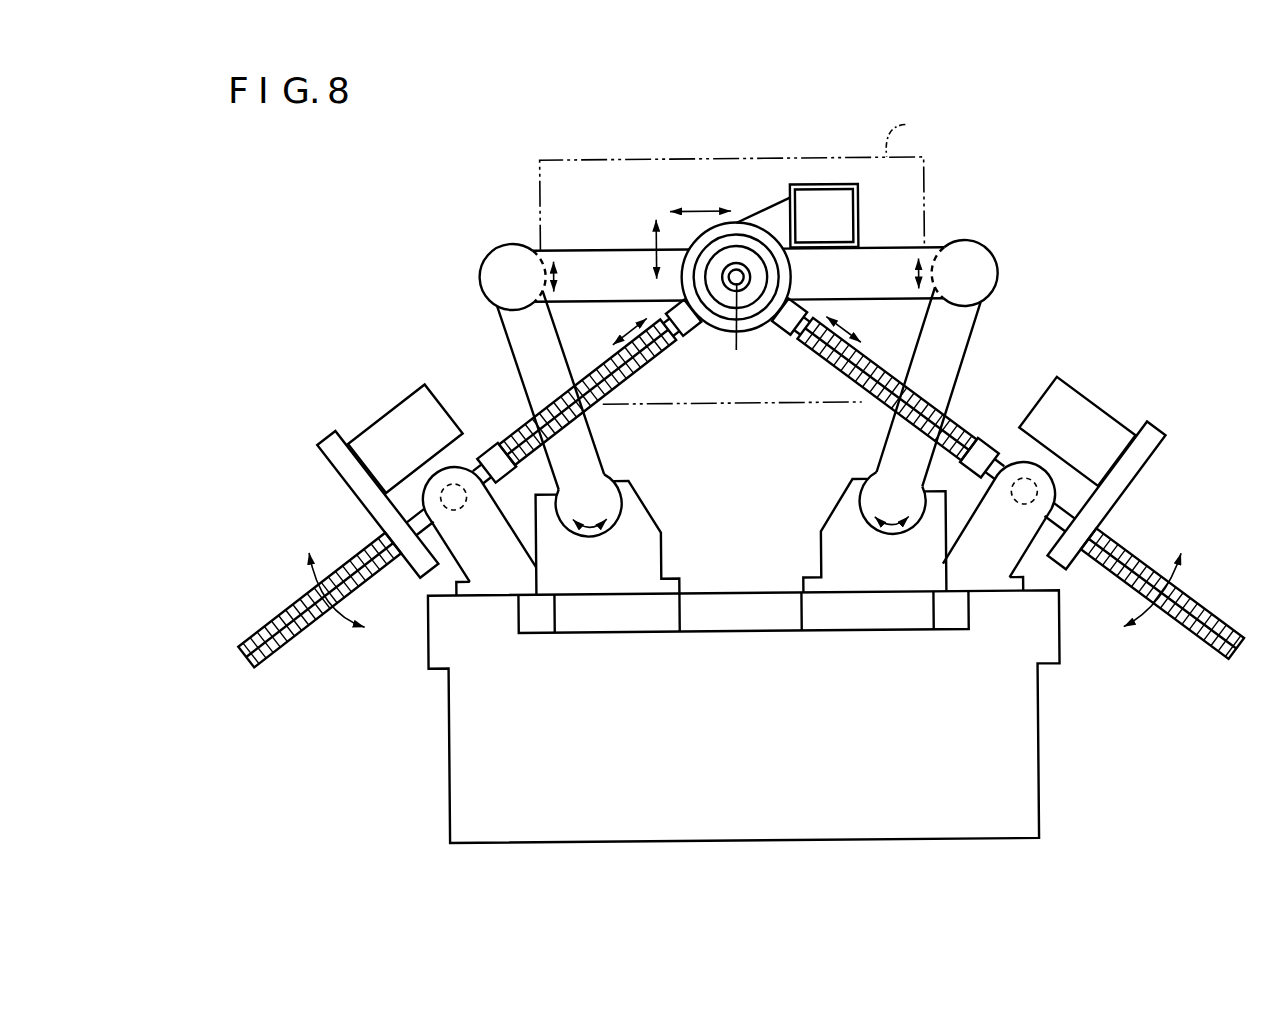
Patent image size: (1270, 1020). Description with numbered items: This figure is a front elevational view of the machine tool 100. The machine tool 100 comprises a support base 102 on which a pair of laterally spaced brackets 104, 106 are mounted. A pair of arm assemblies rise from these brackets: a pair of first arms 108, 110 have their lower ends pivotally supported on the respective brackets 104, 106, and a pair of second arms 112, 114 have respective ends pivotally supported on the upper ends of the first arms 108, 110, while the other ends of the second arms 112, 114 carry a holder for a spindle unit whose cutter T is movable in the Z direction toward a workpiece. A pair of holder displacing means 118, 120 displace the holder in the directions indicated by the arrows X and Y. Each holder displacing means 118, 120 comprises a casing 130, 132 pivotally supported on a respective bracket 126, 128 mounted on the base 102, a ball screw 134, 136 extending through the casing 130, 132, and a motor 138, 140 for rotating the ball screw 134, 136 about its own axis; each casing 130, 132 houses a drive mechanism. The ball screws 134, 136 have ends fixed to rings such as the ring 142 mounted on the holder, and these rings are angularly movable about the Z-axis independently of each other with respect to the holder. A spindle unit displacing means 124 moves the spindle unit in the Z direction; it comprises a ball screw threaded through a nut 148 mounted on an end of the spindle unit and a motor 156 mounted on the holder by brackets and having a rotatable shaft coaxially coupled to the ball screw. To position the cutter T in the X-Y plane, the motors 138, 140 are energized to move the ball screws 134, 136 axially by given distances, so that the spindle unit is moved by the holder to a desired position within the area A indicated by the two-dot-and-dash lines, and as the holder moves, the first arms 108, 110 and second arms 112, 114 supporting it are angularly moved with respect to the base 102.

The machine tool 100 is at (743, 459).
The support base 102 is at (1030, 759).
The bracket 104 is at (848, 520).
The bracket 106 is at (630, 523).
The first arm 108 is at (962, 328).
The first arm 110 is at (527, 329).
The second arm 112 is at (893, 262).
The second arm 114 is at (603, 276).
The holder displacing means 118 is at (1117, 413).
The holder displacing means 120 is at (388, 400).
The spindle unit displacing means 124 is at (799, 178).
The bracket 126 is at (985, 569).
The bracket 128 is at (490, 578).
The casing 130 is at (1068, 511).
The casing 132 is at (468, 462).
The ball screw 134 is at (1203, 611).
The ball screw 136 is at (306, 624).
The motor 138 is at (1068, 416).
The motor 140 is at (410, 416).
The ring 142 is at (786, 268).
The nut 148 is at (777, 222).
The motor 156 is at (820, 208).